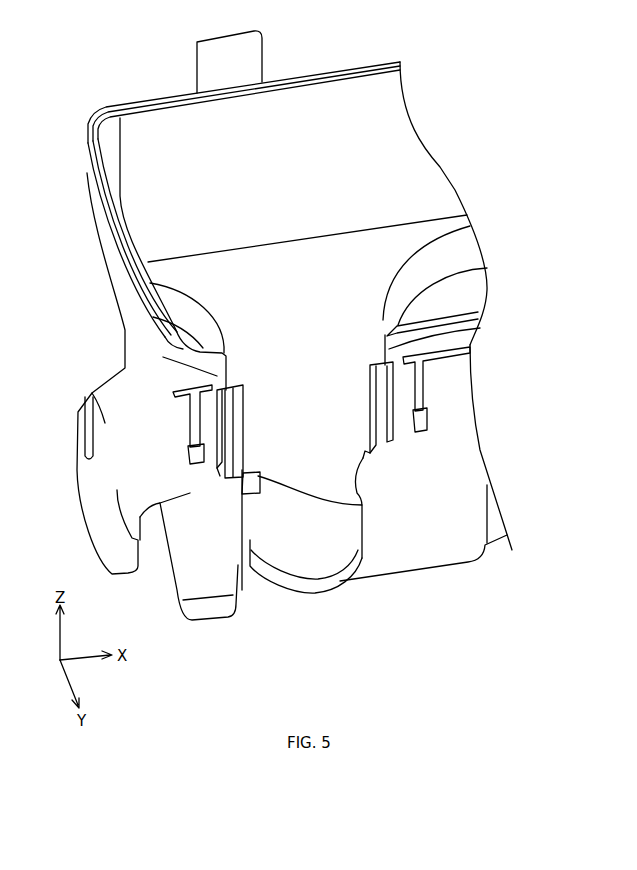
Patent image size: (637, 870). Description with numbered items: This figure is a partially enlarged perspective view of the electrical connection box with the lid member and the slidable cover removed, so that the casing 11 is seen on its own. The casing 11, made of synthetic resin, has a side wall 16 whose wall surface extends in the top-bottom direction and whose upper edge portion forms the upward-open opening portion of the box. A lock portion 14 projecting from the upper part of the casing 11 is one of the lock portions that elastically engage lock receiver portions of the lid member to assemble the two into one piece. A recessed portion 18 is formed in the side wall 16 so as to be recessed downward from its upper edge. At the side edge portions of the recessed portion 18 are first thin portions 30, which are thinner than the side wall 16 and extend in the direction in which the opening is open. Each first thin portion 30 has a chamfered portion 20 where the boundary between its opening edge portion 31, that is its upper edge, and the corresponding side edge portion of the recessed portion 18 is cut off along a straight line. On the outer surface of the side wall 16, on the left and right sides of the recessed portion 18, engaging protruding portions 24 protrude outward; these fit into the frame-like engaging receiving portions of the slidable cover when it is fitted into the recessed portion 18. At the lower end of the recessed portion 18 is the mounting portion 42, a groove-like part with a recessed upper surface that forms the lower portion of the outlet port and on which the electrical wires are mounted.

The lock portion 14 is at (224, 47).
The chamfered portion 20 is at (170, 290).
The opening edge portion 31 is at (177, 327).
The first thin portion 30 is at (223, 375).
The engaging protruding portion 24 is at (192, 450).
The casing 11 is at (463, 443).
The side wall 16 is at (465, 480).
The recessed portion 18 is at (362, 507).
The mounting portion 42 is at (315, 562).